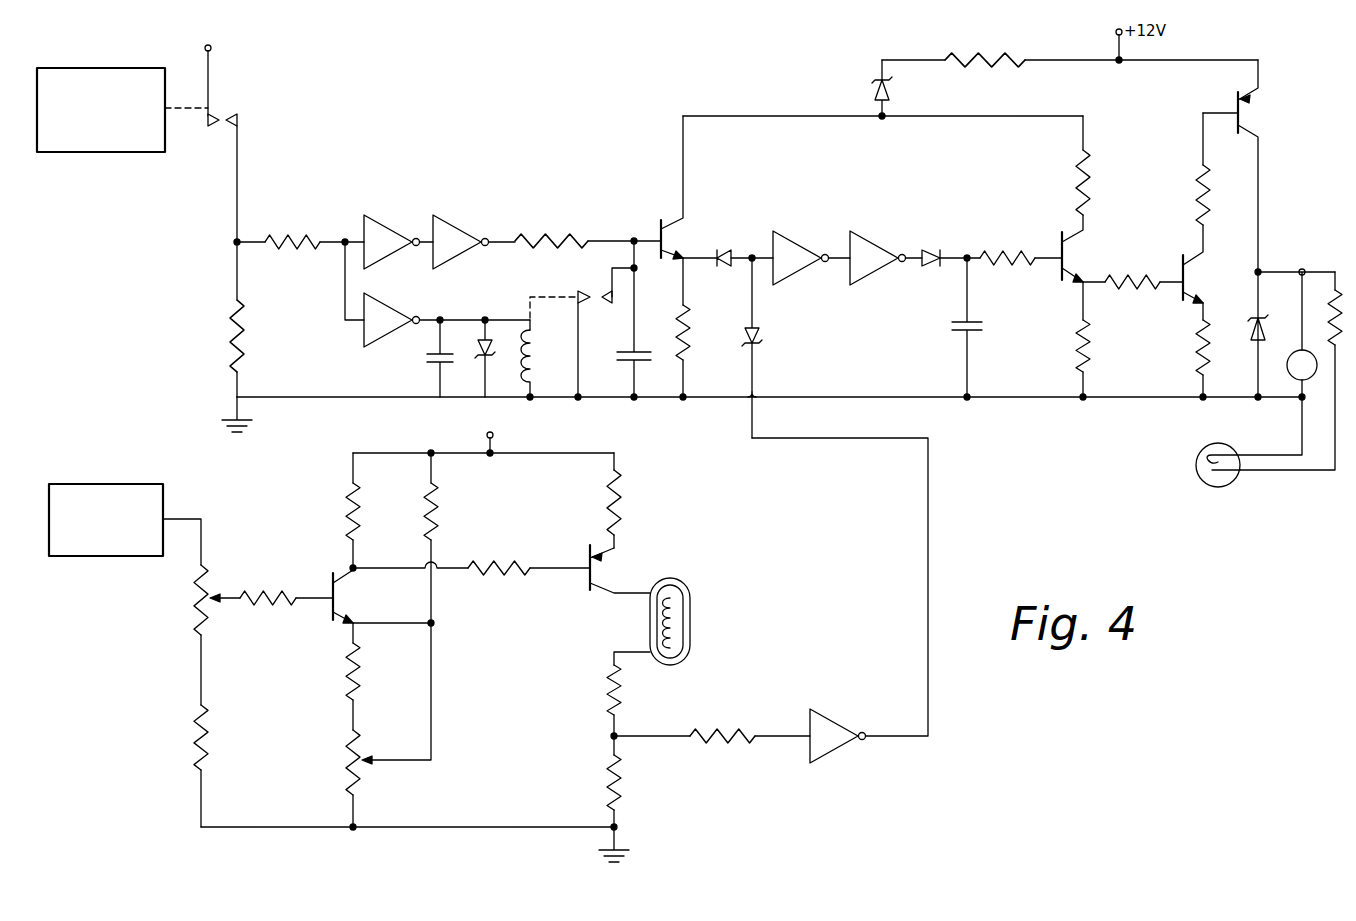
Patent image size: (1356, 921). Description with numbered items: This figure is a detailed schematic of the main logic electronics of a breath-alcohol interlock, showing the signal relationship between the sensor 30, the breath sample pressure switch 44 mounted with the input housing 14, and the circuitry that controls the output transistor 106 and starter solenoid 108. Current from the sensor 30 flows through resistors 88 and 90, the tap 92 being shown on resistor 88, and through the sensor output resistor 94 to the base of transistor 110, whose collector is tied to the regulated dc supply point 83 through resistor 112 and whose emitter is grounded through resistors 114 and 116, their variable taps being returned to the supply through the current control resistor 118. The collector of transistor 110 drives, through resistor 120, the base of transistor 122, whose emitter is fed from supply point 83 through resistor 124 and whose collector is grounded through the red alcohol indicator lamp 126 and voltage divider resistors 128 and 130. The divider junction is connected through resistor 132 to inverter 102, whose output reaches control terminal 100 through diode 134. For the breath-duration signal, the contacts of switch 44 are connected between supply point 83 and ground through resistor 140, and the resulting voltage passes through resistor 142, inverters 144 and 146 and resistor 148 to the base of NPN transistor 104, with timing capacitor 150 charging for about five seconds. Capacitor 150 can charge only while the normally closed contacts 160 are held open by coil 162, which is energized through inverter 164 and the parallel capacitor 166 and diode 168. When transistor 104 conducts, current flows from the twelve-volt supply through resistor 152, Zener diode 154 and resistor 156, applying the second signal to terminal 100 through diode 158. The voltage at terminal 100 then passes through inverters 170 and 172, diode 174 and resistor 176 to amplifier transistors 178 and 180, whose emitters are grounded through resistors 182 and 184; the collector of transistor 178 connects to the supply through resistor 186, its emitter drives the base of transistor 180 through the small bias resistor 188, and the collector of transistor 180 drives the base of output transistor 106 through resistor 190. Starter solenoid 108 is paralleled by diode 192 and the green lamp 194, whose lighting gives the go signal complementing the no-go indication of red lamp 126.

The input housing 14 is at (140, 140).
The sensor 30 is at (110, 482).
The breath sample pressure switch 44 is at (244, 118).
The regulated dc supply point 83 is at (212, 48).
The resistor 88 is at (195, 605).
The resistor 90 is at (196, 722).
The potentiometer wiper 92 is at (220, 594).
The sensor output resistor 94 is at (265, 602).
The control terminal 100 is at (752, 255).
The inverter 102 is at (835, 745).
The NPN transistor 104 is at (672, 226).
The output transistor 106 is at (1250, 102).
The starter solenoid 108 is at (1295, 354).
The transistor 110 is at (340, 593).
The resistor 112 is at (348, 500).
The resistor 114 is at (348, 655).
The resistor 116 is at (350, 742).
The current control resistor 118 is at (440, 525).
The resistor 120 is at (505, 572).
The transistor 122 is at (605, 556).
The resistor 124 is at (622, 478).
The red colored incandescent alcohol indicator lamp 126 is at (692, 612).
The voltage divider resistor 128 is at (608, 706).
The voltage divider resistor 130 is at (608, 784).
The resistor 132 is at (740, 740).
The diode 134 is at (762, 333).
The resistor 140 is at (232, 322).
The resistor 142 is at (302, 240).
The inverter 144 is at (383, 232).
The inverter 146 is at (455, 232).
The resistor 148 is at (578, 240).
The timing capacitor 150 is at (630, 352).
The resistor 152 is at (985, 60).
The Zener diode 154 is at (870, 94).
The resistor 156 is at (688, 345).
The diode 158 is at (724, 262).
The contacts 160 is at (605, 292).
The coil 162 is at (524, 358).
The inverter 164 is at (370, 330).
The capacitor 166 is at (432, 362).
The diode 168 is at (480, 360).
The inverter 170 is at (795, 245).
The inverter 172 is at (860, 238).
The diode 174 is at (930, 250).
The resistor 176 is at (983, 255).
The amplifier transistor 178 is at (1068, 245).
The amplifier transistor 180 is at (1192, 265).
The resistor 182 is at (1078, 365).
The resistor 184 is at (1198, 367).
The resistor 186 is at (1088, 188).
The small bias resistor 188 is at (1130, 287).
The resistor 190 is at (1198, 172).
The diode 192 is at (1256, 344).
The green colored incandescent lamp 194 is at (1196, 472).